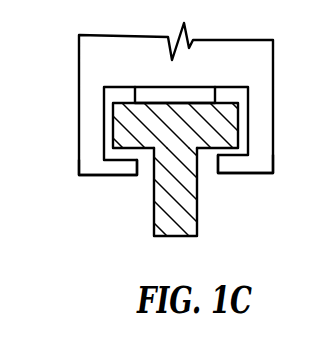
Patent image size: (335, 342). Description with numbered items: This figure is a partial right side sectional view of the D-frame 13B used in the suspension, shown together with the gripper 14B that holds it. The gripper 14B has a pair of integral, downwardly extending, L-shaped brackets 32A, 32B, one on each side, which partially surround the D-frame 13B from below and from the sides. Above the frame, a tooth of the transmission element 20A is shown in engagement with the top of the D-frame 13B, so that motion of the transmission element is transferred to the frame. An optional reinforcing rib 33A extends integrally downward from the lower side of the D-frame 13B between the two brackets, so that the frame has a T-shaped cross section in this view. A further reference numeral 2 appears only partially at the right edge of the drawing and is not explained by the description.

The transmission element 20A is at (147, 92).
The gripper 14B is at (93, 92).
The D-frame 13B is at (130, 138).
The reinforcing rib 33A is at (170, 216).
The L-shaped bracket 32B is at (88, 164).
The L-shaped bracket 32A is at (258, 154).
The partial reference numeral 2 is at (328, 124).